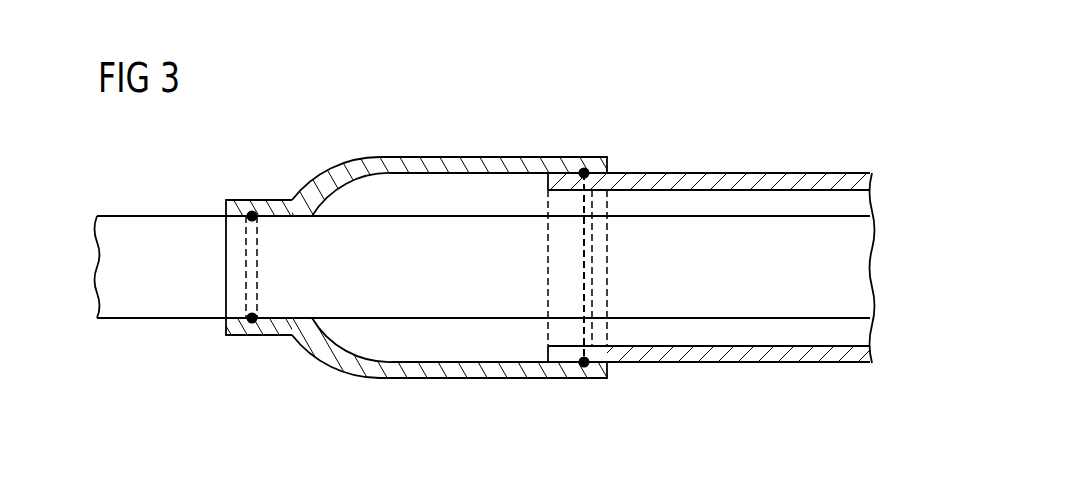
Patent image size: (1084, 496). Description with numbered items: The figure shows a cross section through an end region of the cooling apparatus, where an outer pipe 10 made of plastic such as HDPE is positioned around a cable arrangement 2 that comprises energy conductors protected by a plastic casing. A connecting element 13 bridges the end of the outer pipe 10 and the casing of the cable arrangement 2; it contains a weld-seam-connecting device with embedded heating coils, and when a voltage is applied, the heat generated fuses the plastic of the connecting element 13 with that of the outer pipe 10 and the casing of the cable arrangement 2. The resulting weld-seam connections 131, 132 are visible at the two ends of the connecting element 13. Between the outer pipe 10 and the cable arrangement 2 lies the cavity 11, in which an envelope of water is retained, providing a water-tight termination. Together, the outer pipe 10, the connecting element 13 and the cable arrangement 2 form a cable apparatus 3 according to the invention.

The cable arrangement 2 is at (864, 280).
The cable apparatus 3 is at (452, 407).
The outer pipe 10 is at (734, 180).
The cavity 11 is at (864, 333).
The connecting element 13 is at (377, 165).
The weld-seam connection 131 is at (252, 213).
The weld-seam connection 132 is at (586, 369).